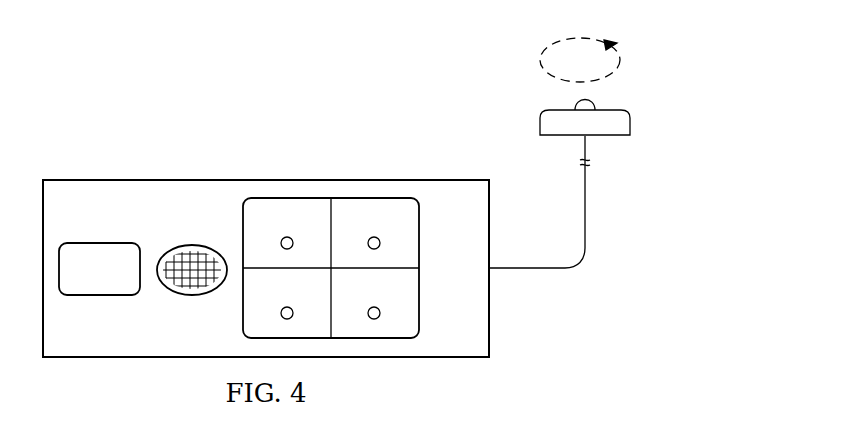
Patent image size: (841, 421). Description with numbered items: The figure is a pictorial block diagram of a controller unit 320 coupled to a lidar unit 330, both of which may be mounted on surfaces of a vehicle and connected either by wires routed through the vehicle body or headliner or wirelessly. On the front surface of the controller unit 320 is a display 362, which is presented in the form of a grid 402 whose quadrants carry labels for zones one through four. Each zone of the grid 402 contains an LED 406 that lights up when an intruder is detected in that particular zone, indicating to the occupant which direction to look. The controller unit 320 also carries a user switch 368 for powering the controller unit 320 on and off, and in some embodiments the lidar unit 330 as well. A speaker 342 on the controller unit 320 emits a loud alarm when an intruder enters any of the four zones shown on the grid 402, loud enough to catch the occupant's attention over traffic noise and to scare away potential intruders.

The controller unit 320 is at (213, 178).
The user switch 368 is at (99, 242).
The speaker 342 is at (186, 244).
The grid 402 is at (330, 210).
The display 362 is at (420, 285).
The LED 406 is at (380, 243).
The lidar unit 330 is at (630, 125).